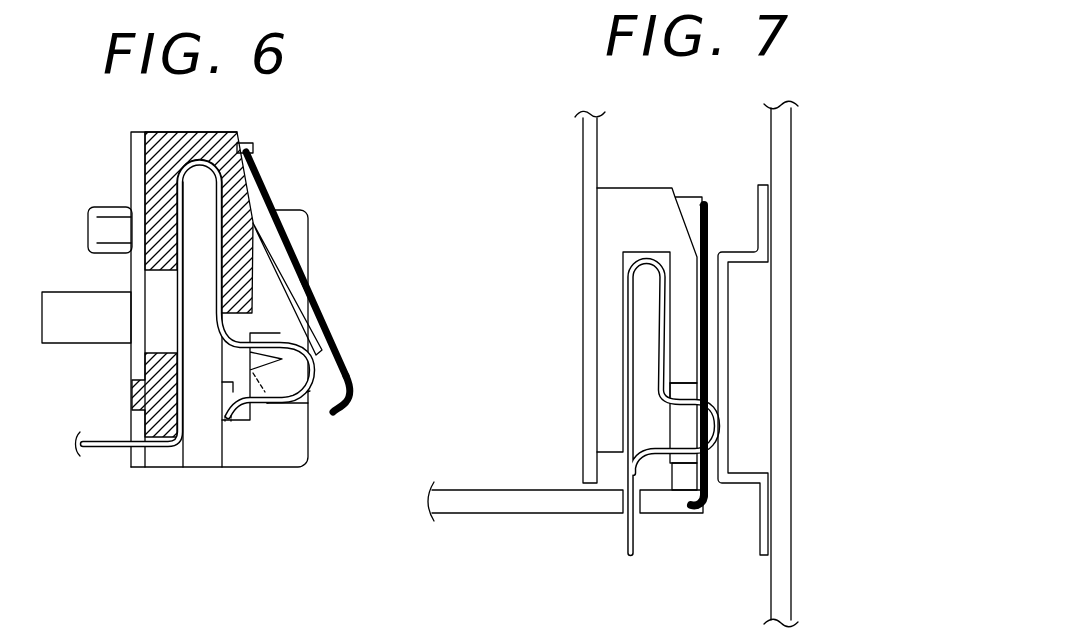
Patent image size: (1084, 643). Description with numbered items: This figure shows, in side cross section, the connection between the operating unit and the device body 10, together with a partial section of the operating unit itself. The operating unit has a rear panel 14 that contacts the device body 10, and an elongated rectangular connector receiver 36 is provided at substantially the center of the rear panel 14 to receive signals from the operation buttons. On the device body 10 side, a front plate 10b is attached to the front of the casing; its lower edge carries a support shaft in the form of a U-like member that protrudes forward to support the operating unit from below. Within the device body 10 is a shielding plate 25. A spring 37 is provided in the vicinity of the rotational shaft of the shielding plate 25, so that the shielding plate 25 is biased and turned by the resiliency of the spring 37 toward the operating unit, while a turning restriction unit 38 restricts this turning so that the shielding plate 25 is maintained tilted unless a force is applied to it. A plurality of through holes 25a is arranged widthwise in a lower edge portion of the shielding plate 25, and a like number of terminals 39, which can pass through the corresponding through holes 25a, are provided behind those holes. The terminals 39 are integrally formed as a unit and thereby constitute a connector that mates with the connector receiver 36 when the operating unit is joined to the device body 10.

In FIG. 7, the device body 10 is at (487, 505).
In FIG. 7, the front plate 10b is at (582, 163).
In FIG. 7, the rear panel 14 is at (782, 143).
In FIG. 6, the shielding plate 25 is at (277, 198).
In FIG. 7, the shielding plate 25 is at (708, 205).
In FIG. 6, the through holes 25a is at (333, 334).
In FIG. 7, the through holes 25a is at (707, 382).
In FIG. 7, the connector receiver 36 is at (768, 495).
In FIG. 6, the spring 37 is at (308, 300).
In FIG. 6, the turning restriction unit 38 is at (155, 175).
In FIG. 7, the turning restriction unit 38 is at (612, 268).
In FIG. 6, the terminals 39 is at (348, 368).
In FIG. 7, the terminals 39 is at (658, 460).